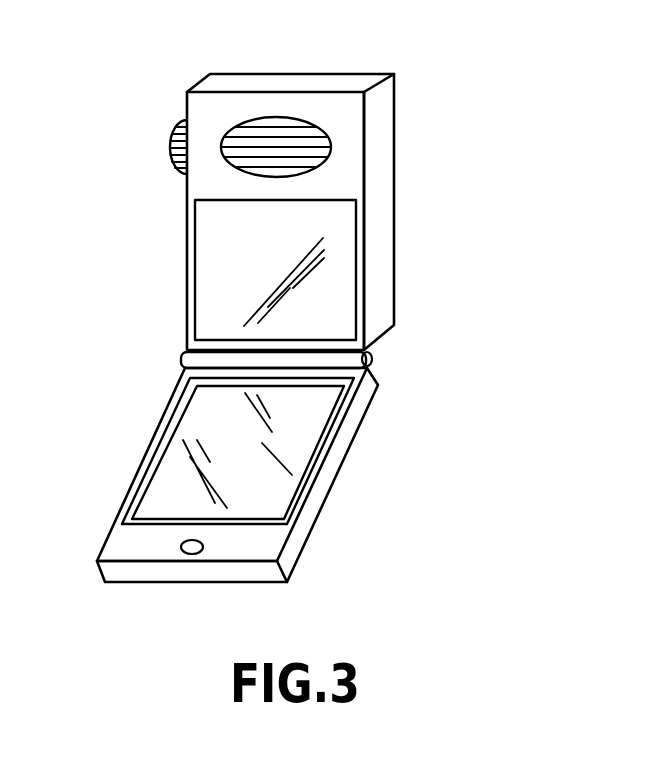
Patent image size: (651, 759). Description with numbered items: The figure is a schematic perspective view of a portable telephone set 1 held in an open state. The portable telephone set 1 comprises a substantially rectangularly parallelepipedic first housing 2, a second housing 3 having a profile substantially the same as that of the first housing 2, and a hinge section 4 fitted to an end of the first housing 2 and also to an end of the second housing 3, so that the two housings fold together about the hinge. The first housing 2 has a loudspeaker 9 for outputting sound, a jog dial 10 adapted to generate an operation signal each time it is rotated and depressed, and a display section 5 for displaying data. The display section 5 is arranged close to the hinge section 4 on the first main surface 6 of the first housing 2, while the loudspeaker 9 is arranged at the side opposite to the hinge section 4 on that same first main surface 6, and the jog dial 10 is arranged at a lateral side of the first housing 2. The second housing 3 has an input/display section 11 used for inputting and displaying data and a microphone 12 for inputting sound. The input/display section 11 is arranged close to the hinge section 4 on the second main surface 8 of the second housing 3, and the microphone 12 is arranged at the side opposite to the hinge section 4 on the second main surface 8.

The portable telephone set 1 is at (408, 67).
The first housing 2 is at (383, 142).
The second housing 3 is at (150, 572).
The hinge section 4 is at (373, 357).
The display section 5 is at (337, 235).
The first main surface 6 is at (208, 185).
The second main surface 8 is at (125, 542).
The loudspeaker 9 is at (237, 132).
The jog dial 10 is at (170, 141).
The input/display section 11 is at (283, 445).
The microphone 12 is at (200, 543).